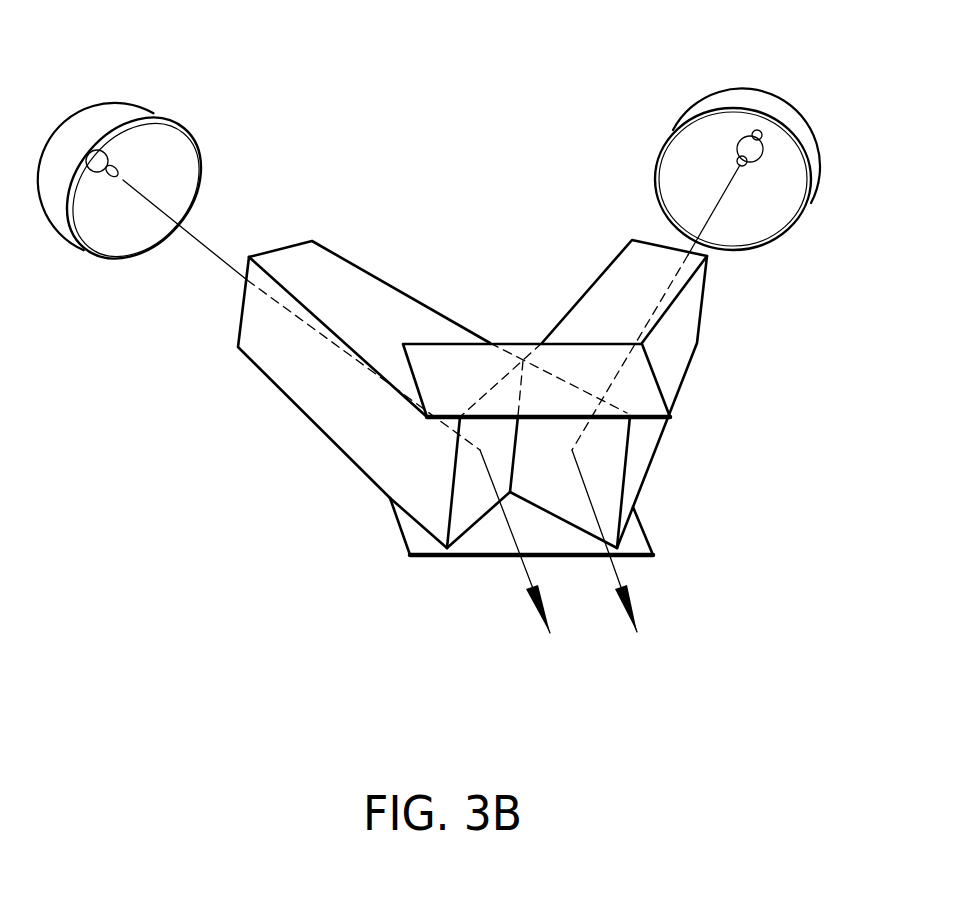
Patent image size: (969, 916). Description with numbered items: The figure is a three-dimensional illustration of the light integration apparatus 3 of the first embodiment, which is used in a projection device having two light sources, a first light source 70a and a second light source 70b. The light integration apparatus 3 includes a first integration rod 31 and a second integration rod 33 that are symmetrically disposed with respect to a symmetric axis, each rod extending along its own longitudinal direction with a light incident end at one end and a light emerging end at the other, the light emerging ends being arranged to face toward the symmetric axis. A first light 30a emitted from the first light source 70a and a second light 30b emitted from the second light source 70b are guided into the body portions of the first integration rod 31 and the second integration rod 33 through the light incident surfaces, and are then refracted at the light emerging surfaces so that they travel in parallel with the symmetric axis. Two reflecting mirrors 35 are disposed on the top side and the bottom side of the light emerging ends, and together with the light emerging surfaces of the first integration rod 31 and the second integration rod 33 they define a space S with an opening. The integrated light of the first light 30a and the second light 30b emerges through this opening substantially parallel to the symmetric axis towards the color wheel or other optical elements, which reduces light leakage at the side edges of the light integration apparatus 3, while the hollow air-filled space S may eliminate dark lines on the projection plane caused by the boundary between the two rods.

The light integration apparatus 3 is at (487, 150).
The first integration rod 31 is at (596, 270).
The second integration rod 33 is at (397, 272).
The reflecting mirrors 35 is at (635, 540).
The first light 30a is at (717, 203).
The second light 30b is at (203, 237).
The first light source 70a is at (783, 102).
The second light source 70b is at (117, 100).
The space S is at (488, 541).